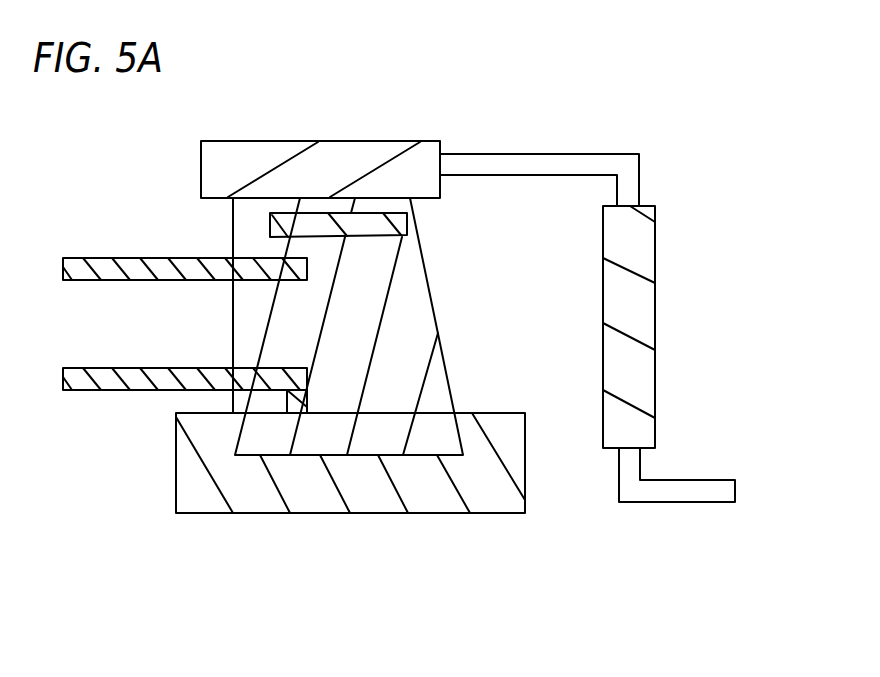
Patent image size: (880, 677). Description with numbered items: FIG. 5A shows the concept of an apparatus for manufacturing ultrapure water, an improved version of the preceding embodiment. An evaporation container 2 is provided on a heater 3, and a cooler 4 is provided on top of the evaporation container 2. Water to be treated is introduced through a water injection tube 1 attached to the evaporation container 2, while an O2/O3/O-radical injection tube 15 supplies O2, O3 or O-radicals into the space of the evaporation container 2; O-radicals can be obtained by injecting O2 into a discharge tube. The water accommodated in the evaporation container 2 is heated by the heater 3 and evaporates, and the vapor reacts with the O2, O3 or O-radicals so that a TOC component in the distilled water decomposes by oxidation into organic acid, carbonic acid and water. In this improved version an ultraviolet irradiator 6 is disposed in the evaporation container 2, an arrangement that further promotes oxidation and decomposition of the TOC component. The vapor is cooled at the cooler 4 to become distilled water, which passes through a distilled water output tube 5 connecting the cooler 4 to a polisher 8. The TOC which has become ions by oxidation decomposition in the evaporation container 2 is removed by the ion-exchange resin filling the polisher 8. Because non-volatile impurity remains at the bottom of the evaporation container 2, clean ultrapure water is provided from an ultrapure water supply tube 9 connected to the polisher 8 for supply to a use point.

The water injection tube 1 is at (117, 395).
The evaporation container 2 is at (422, 262).
The heater 3 is at (322, 513).
The cooler 4 is at (373, 140).
The distilled water output tube 5 is at (563, 152).
The ultraviolet irradiator 6 is at (398, 222).
The polisher 8 is at (657, 305).
The ultrapure water supply tube 9 is at (698, 480).
The O2/O3/O-radical injection tube 15 is at (128, 257).